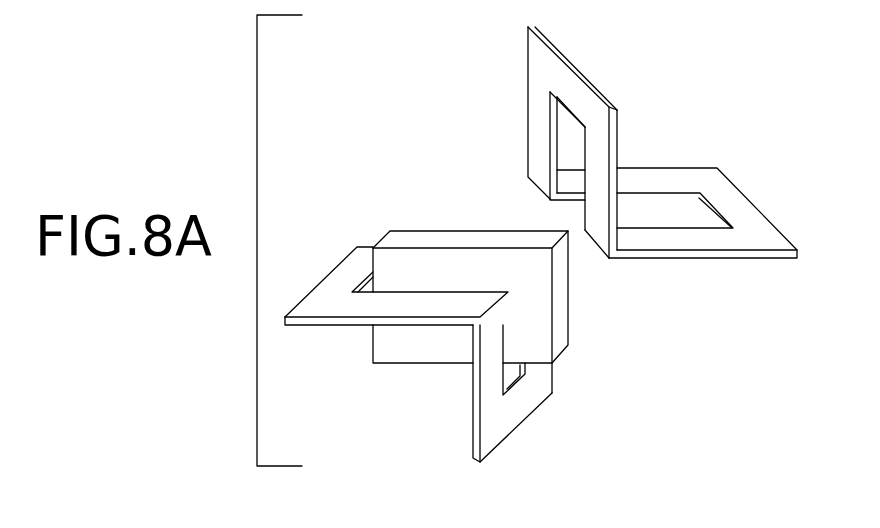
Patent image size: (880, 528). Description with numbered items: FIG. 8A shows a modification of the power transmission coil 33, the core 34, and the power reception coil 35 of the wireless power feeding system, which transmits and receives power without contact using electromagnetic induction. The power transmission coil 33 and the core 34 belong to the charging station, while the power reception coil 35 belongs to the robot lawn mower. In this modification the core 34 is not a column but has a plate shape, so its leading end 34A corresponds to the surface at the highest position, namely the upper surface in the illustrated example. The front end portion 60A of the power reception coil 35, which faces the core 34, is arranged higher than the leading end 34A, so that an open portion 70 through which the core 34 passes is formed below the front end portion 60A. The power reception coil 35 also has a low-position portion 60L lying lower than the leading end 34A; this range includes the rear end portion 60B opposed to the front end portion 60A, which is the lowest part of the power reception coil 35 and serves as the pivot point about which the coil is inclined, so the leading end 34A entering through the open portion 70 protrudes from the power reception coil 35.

The power transmission coil 33 is at (332, 328).
The core 34 is at (438, 281).
The leading end 34A is at (413, 237).
The power reception coil 35 is at (618, 135).
The front end portion 60A is at (610, 186).
The rear end portion 60B is at (740, 208).
The low-position portion 60L is at (614, 259).
The open portion 70 is at (634, 186).